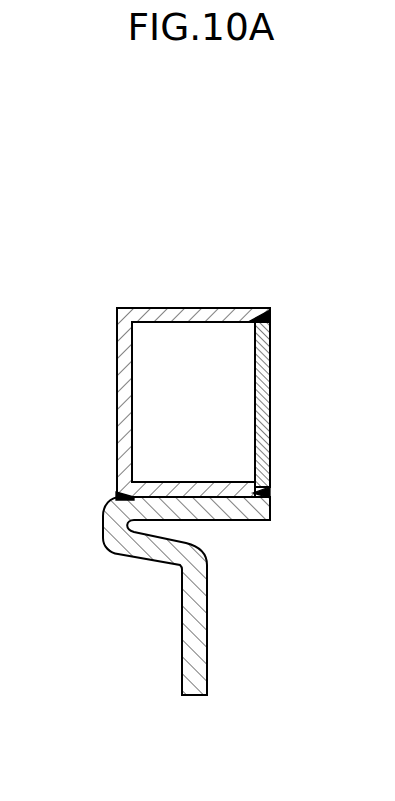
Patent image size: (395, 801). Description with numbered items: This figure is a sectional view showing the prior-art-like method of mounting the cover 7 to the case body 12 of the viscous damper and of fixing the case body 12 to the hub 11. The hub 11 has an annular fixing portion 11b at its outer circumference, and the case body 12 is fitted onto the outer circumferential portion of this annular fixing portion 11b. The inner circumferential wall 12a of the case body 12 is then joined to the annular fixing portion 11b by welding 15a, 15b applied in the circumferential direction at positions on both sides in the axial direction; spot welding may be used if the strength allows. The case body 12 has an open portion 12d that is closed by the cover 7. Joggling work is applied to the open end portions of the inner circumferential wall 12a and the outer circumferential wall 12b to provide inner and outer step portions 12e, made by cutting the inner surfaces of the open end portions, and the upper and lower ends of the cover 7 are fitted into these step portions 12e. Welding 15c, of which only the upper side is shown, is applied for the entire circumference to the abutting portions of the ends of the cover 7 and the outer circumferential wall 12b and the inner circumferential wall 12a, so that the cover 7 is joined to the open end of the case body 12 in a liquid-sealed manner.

The cover 7 is at (295, 404).
The hub 11 is at (186, 596).
The annular fixing portion 11b is at (223, 516).
The case body 12 is at (188, 370).
The inner circumferential wall 12a is at (187, 481).
The outer circumferential wall 12b is at (190, 307).
The open portion 12d is at (232, 322).
The step portion 12e is at (264, 324).
The welding 15a is at (122, 497).
The welding 15b is at (270, 493).
The welding 15c is at (265, 311).